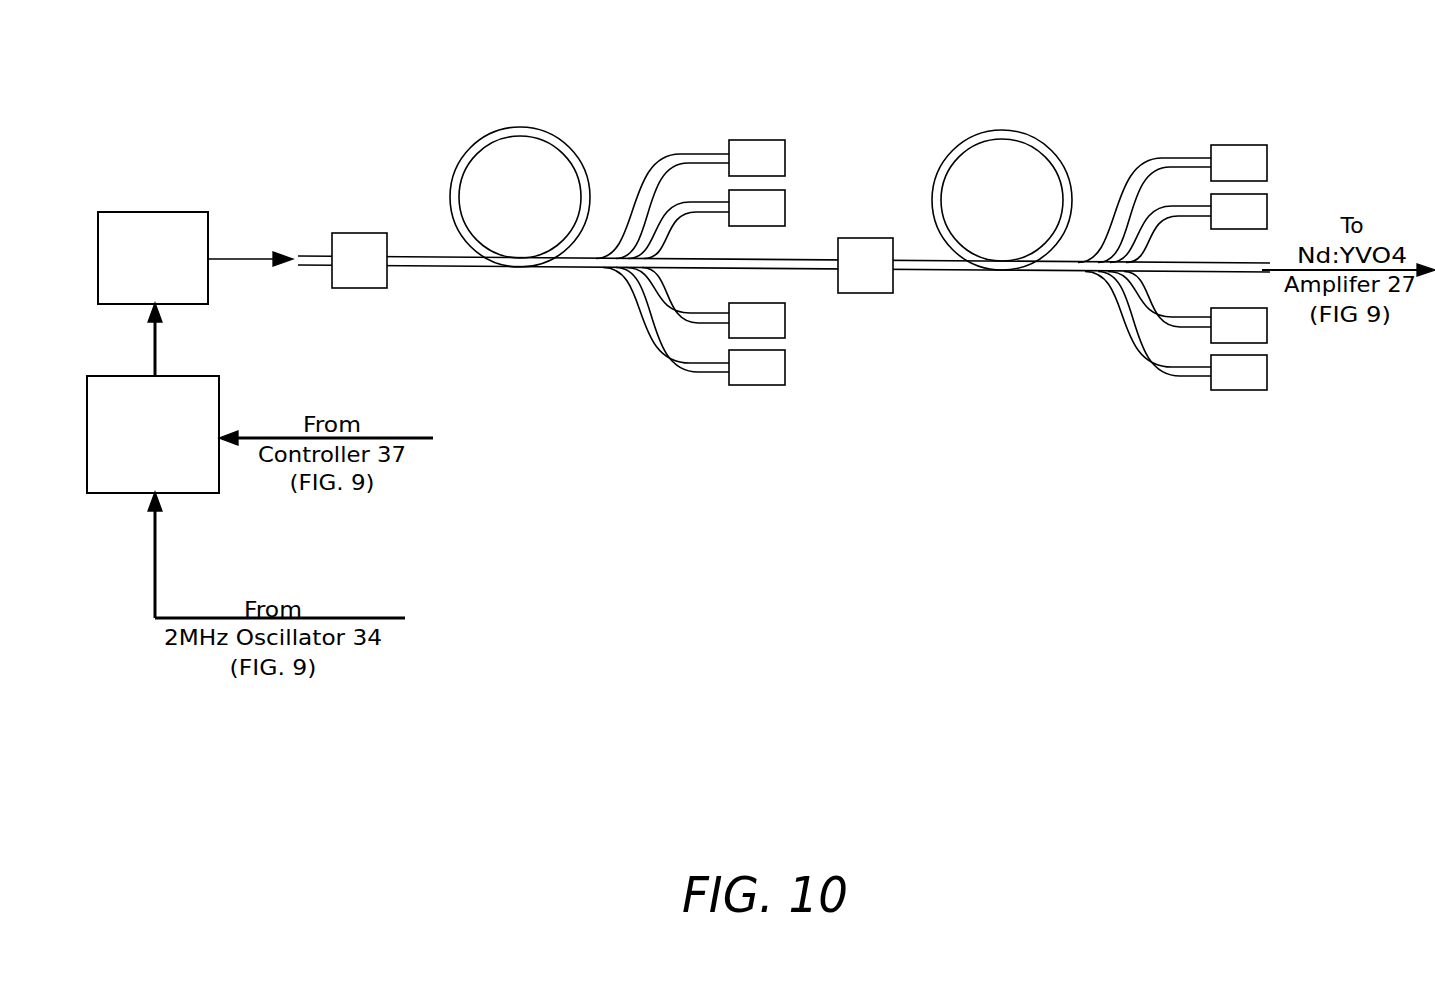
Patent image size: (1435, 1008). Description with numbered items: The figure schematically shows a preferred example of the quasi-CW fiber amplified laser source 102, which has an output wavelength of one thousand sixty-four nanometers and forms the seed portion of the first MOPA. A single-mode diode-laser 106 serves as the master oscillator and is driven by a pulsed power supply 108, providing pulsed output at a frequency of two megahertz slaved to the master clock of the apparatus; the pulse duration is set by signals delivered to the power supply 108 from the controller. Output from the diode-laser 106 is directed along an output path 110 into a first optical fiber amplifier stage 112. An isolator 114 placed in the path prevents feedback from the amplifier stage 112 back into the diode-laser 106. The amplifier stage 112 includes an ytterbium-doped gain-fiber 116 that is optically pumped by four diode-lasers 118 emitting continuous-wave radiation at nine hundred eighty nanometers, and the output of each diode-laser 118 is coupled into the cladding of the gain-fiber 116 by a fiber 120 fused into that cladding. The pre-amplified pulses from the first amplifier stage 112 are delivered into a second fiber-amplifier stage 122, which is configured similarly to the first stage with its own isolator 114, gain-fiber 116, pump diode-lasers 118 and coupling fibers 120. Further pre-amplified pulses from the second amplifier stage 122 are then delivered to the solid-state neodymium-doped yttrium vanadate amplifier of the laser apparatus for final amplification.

The quasi-CW fiber amplified laser source 102 is at (1010, 730).
The single-mode diode-laser 106 is at (193, 211).
The pulsed power supply 108 is at (214, 383).
The output fiber / laser beam 110 is at (255, 256).
The first optical fiber amplifier stage 112 is at (630, 445).
The isolator 114 is at (385, 277).
The ytterbium-doped gain-fiber 116 is at (527, 128).
The diode-lasers 118 is at (767, 141).
The fiber 120 is at (673, 150).
The second fiber-amplifier stage 122 is at (1092, 485).